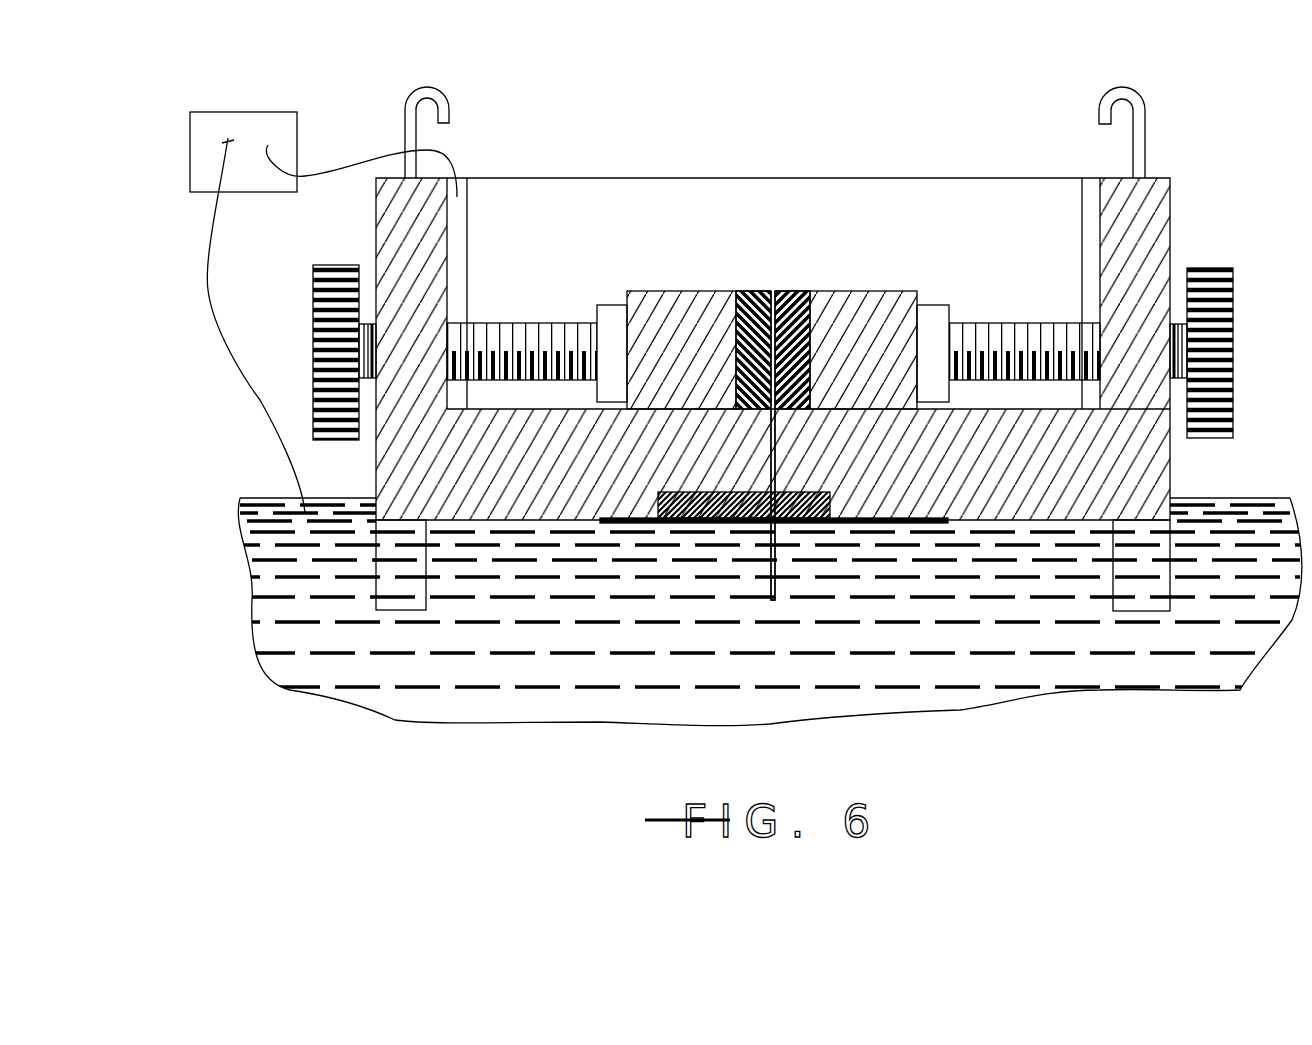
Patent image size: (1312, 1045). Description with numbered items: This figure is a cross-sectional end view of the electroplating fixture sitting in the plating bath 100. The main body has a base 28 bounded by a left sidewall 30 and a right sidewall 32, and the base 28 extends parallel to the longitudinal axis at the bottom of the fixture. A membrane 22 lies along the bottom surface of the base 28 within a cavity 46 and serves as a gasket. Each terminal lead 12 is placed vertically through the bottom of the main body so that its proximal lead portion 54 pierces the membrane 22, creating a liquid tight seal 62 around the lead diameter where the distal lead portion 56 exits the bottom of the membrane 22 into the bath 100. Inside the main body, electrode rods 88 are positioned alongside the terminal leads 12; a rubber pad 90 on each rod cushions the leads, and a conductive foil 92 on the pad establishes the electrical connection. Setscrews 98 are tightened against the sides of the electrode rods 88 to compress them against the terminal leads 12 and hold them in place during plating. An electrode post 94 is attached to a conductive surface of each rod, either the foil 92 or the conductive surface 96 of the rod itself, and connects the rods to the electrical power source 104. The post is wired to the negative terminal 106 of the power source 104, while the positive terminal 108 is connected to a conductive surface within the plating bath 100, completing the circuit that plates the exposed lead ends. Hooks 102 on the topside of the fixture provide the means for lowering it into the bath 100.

The terminal leads 12 is at (767, 455).
The membrane 22 is at (660, 505).
The base 28 is at (1147, 465).
The left sidewall 30 is at (1158, 195).
The right sidewall 32 is at (392, 255).
The cavity 46 is at (830, 502).
The proximal lead portion 54 is at (777, 590).
The distal lead portion 56 is at (790, 296).
The liquid tight seal 62 is at (768, 527).
The electrode rods 88 is at (652, 300).
The rubber pad 90 is at (740, 293).
The foil 92 is at (777, 291).
The electrode post 94 is at (458, 222).
The electrically conductive surface 96 is at (757, 292).
The setscrews 98 is at (1012, 322).
The plating bath 100 is at (1208, 645).
The hooks 102 is at (450, 112).
The electrical power source 104 is at (190, 120).
The negative terminal 106 is at (268, 145).
The positive terminal 108 is at (228, 143).